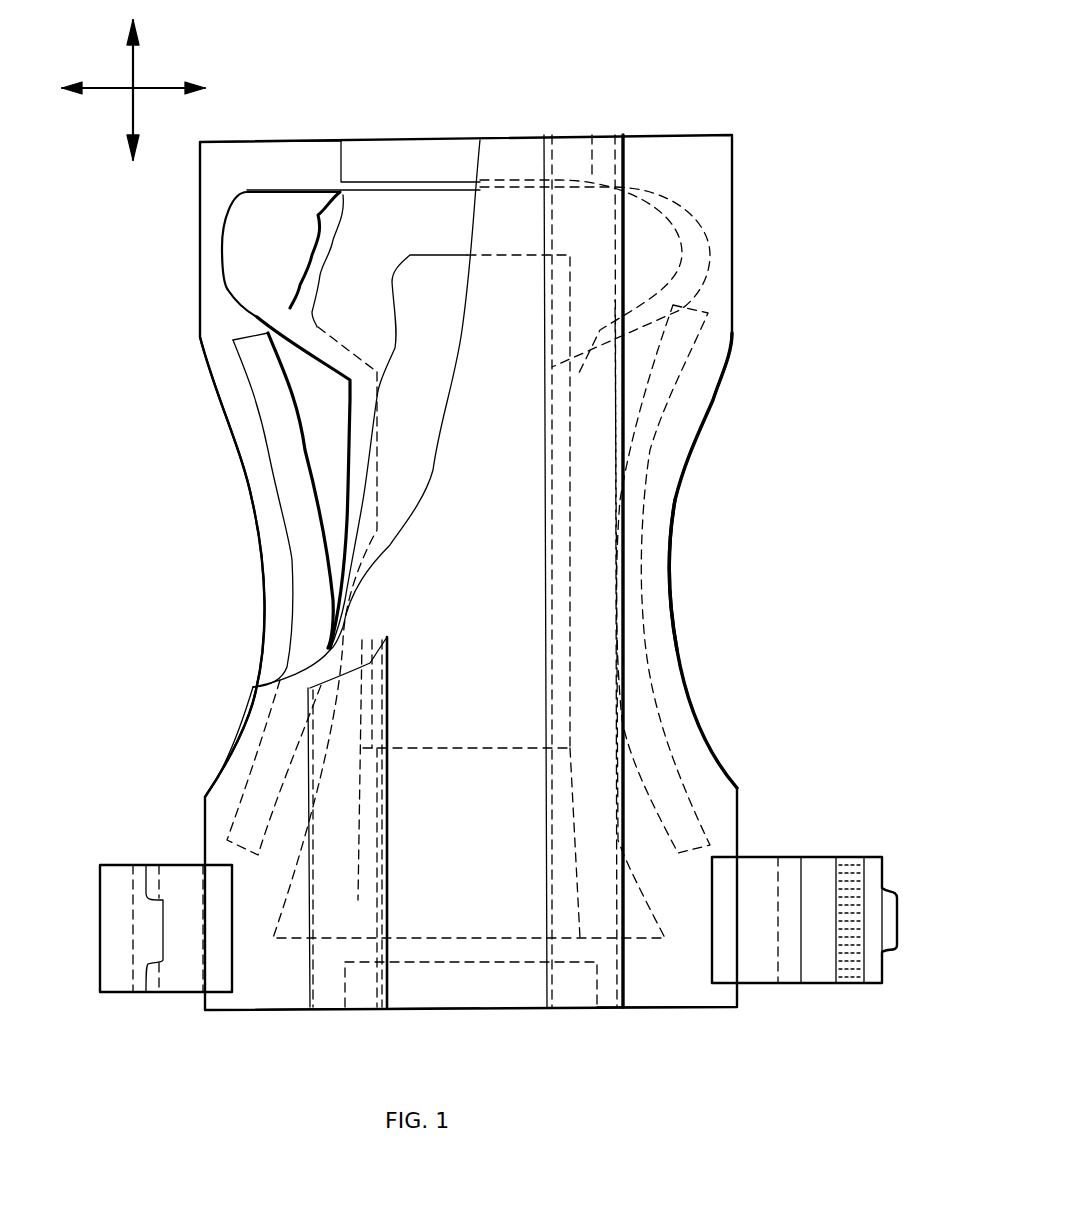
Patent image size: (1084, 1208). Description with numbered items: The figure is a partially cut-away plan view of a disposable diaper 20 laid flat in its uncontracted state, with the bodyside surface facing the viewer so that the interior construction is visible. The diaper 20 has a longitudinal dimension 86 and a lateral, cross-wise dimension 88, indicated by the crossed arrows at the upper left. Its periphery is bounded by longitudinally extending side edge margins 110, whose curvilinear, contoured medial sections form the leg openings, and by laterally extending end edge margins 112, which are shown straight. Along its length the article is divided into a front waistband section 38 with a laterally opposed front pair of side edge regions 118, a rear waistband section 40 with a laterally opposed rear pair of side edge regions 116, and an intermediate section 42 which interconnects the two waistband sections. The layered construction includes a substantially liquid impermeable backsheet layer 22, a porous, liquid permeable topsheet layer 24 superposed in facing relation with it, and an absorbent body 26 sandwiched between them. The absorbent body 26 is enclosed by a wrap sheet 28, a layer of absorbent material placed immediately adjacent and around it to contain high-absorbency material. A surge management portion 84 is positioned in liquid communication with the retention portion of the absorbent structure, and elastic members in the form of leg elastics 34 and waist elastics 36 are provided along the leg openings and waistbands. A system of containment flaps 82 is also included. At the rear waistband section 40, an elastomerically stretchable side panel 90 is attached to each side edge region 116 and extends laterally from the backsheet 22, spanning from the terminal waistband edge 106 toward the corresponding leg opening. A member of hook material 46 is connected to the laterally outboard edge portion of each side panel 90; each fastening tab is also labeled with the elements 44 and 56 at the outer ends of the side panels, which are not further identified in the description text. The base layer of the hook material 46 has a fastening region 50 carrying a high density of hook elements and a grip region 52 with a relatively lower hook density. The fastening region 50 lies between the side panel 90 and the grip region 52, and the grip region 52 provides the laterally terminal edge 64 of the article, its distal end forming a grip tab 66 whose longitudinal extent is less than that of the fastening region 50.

The disposable diaper 20 is at (737, 72).
The backsheet layer 22 is at (215, 343).
The topsheet layer 24 is at (524, 146).
The absorbent body 26 is at (320, 222).
The wrap sheet 28 is at (248, 203).
The leg elastics 34 is at (290, 557).
The waist elastics 36 is at (416, 145).
The front waistband section 38 is at (654, 146).
The rear waistband section 40 is at (668, 1006).
The intermediate section 42 is at (665, 569).
The fastening tab 44 is at (100, 862).
The member of hook material 46 is at (870, 988).
The fastening region 50 is at (106, 902).
The grip region 52 is at (141, 995).
The tab base 56 is at (107, 965).
The laterally terminal edge 64 is at (162, 940).
The grip tab 66 is at (160, 917).
The containment flaps 82 is at (557, 637).
The surge management portion 84 is at (430, 386).
The longitudinal dimension 86 is at (128, 100).
The lateral dimension 88 is at (128, 86).
The side panel 90 is at (188, 995).
The terminal waistband edge 106 is at (283, 1012).
The side edge margins 110 is at (275, 617).
The end edge margins 112 is at (282, 145).
The rear pair of side edge regions 116 is at (203, 815).
The front pair of side edge regions 118 is at (198, 262).